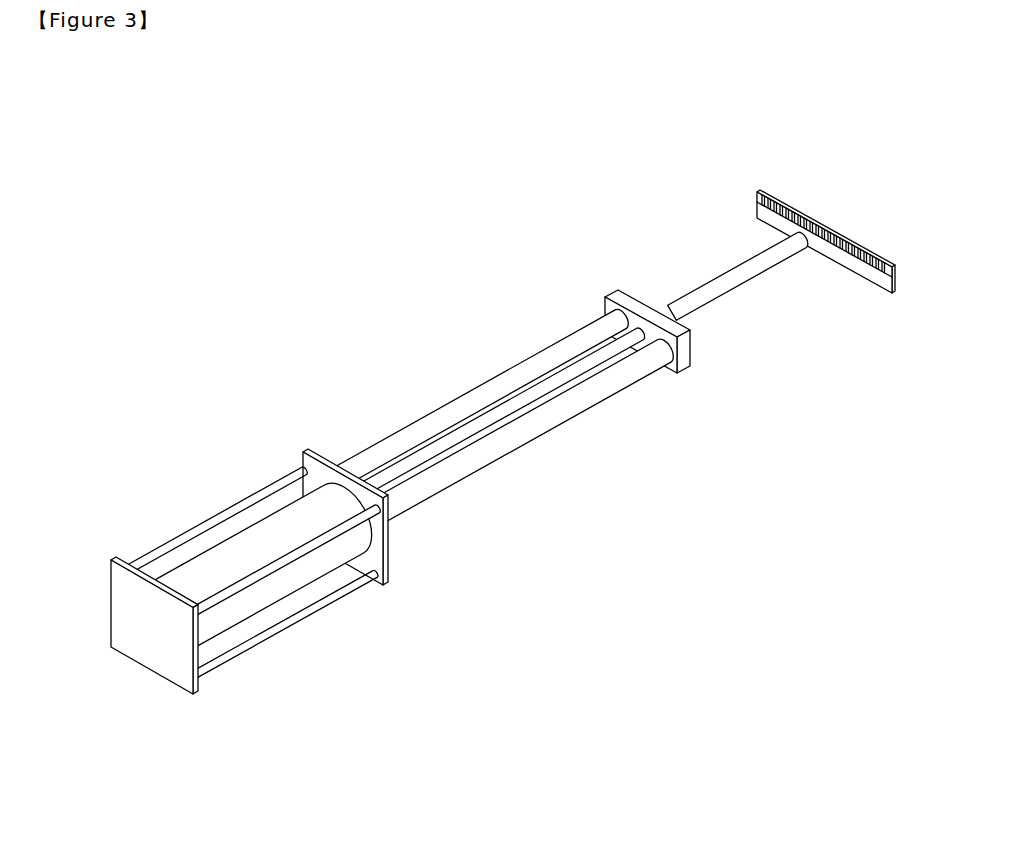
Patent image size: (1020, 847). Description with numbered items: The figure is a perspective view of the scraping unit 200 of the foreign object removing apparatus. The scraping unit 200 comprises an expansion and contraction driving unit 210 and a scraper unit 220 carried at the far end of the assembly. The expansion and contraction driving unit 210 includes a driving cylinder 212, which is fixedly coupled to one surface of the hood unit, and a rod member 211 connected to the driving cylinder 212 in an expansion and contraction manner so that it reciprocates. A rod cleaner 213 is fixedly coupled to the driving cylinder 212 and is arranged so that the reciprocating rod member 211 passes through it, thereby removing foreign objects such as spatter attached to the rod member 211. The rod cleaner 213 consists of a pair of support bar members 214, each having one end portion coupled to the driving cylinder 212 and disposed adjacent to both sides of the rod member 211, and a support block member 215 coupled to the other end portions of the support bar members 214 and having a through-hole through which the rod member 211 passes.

The scraping unit 200 is at (501, 391).
The expansion and contraction driving unit 210 is at (458, 448).
The rod member 211 is at (723, 287).
The driving cylinder 212 is at (250, 530).
The rod cleaner 213 is at (432, 387).
The support bar member 214 is at (425, 427).
The support block member 215 is at (614, 293).
The scraper unit 220 is at (770, 195).